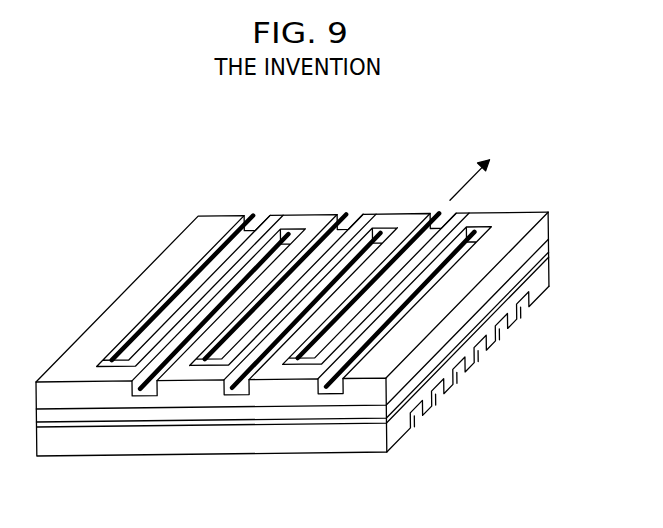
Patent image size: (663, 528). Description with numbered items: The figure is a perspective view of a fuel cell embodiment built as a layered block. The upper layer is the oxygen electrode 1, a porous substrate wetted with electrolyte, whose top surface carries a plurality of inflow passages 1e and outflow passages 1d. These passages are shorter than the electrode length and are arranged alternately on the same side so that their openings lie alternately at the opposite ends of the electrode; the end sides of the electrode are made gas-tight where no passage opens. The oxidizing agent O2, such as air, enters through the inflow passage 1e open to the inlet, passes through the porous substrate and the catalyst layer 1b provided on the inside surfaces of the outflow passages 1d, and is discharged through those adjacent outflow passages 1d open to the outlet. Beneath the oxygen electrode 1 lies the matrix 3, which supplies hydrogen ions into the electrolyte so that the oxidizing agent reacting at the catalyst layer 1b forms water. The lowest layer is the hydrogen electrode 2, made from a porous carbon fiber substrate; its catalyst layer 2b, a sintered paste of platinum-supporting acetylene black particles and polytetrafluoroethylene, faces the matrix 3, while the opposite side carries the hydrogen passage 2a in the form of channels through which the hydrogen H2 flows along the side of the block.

The oxygen electrode 1 is at (518, 219).
The catalyst layer 1b is at (244, 215).
The outflow passages 1d is at (350, 216).
The inflow passages 1e is at (372, 217).
The hydrogen electrode 2 is at (348, 441).
The hydrogen passage 2a is at (420, 425).
The catalyst layer 2b is at (253, 428).
The matrix 3 is at (548, 258).
The oxygen flow O2 is at (217, 410).
The hydrogen flow H2 is at (570, 352).